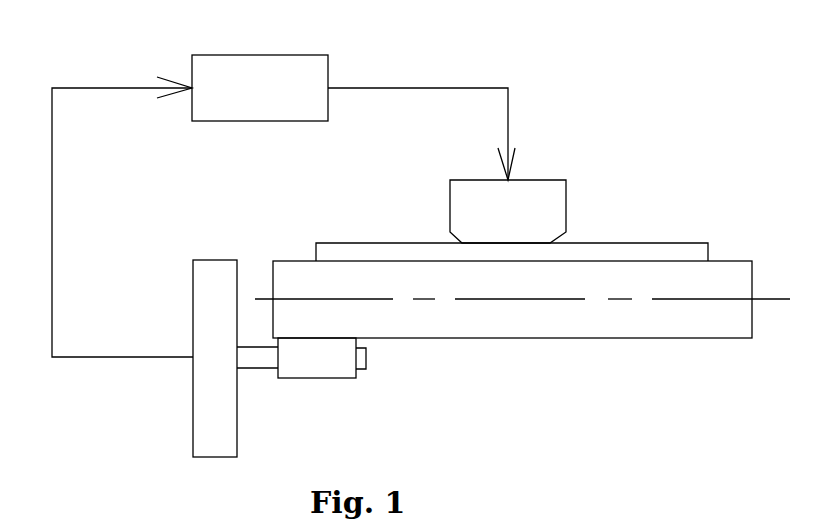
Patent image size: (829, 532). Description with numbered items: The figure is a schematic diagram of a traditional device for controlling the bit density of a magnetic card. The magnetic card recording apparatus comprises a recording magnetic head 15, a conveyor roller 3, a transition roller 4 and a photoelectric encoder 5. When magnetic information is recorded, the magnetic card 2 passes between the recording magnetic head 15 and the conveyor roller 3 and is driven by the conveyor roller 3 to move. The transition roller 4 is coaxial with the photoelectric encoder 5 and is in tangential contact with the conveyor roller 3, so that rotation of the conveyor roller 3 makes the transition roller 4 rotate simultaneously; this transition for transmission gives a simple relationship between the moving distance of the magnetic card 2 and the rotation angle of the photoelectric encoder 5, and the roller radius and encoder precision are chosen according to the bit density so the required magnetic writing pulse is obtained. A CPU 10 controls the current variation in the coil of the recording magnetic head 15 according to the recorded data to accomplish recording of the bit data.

The CPU 10 is at (303, 72).
The recording magnetic head 15 is at (525, 212).
The magnetic card 2 is at (627, 252).
The conveyor roller 3 is at (682, 323).
The photoelectric encoder 5 is at (217, 286).
The transition roller 4 is at (311, 360).